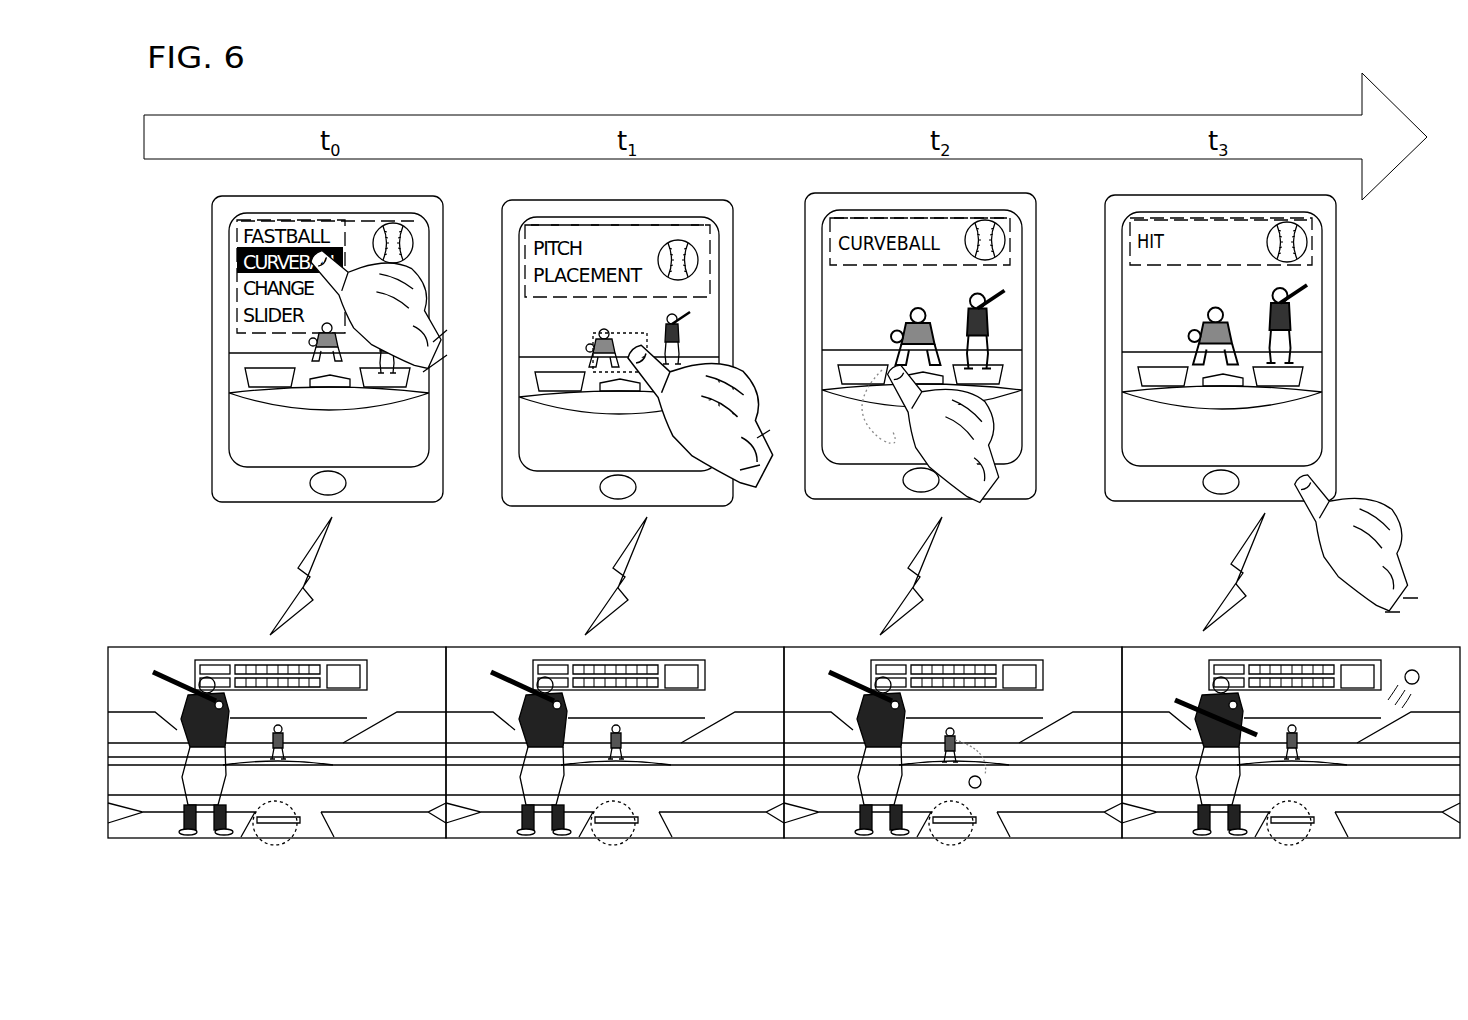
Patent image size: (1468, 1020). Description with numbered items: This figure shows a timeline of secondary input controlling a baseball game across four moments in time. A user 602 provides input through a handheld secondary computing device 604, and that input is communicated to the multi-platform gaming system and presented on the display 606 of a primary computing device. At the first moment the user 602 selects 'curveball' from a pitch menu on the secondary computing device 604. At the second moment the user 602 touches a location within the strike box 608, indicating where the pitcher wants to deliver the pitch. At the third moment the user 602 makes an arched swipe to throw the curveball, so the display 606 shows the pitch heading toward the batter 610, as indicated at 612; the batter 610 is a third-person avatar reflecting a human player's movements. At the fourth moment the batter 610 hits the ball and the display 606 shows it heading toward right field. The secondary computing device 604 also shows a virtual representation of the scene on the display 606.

The user 602 is at (403, 336).
The secondary computing device 604 is at (192, 205).
The display 606 is at (145, 678).
The strike box 608 is at (593, 333).
The batter 610 is at (181, 770).
The pitch heading towards batter 612 is at (1009, 647).